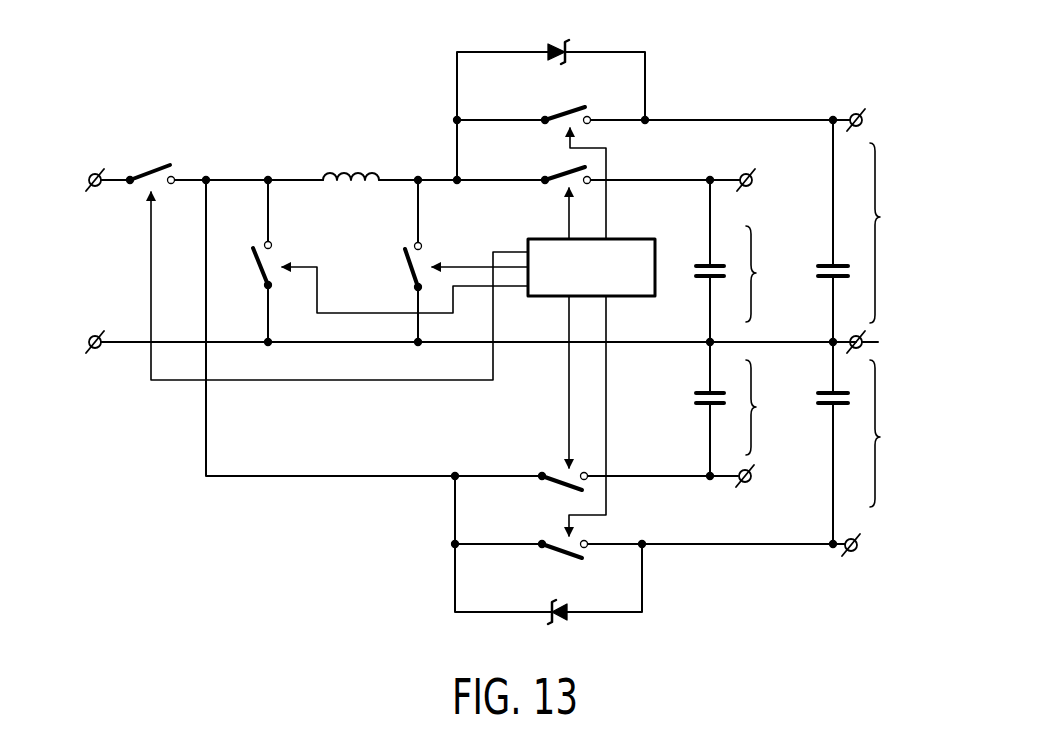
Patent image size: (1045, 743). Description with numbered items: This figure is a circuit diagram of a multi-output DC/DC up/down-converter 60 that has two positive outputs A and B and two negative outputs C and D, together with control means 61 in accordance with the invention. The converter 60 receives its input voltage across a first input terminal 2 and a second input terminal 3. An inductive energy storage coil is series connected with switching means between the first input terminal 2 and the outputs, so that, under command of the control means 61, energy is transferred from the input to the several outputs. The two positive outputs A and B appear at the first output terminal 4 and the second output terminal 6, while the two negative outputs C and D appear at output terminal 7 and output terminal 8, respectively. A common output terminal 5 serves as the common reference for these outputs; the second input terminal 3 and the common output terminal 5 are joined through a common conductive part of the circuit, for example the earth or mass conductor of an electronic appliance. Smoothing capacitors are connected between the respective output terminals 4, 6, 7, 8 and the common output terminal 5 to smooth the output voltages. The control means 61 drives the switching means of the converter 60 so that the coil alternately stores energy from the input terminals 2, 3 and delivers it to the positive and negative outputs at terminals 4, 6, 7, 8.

The multi-output DC/DC up/down-converter 60 is at (503, 334).
The control means 61 is at (540, 297).
The first input terminal 2 is at (95, 172).
The second input terminal 3 is at (95, 349).
The first output terminal 4 is at (853, 112).
The common output terminal 5 is at (863, 342).
The second output terminal 6 is at (744, 172).
The output terminal 7 is at (747, 483).
The output terminal 8 is at (853, 552).